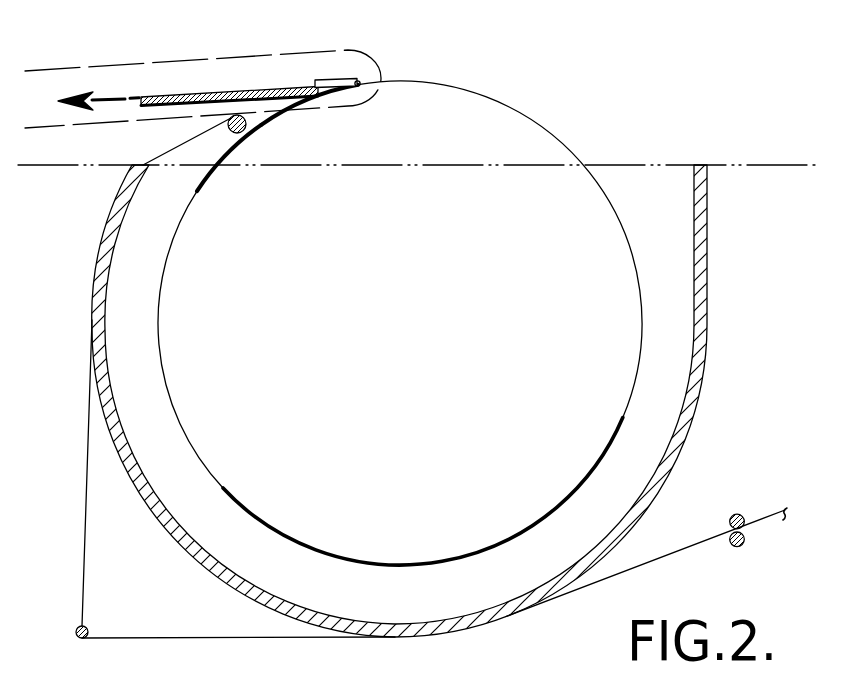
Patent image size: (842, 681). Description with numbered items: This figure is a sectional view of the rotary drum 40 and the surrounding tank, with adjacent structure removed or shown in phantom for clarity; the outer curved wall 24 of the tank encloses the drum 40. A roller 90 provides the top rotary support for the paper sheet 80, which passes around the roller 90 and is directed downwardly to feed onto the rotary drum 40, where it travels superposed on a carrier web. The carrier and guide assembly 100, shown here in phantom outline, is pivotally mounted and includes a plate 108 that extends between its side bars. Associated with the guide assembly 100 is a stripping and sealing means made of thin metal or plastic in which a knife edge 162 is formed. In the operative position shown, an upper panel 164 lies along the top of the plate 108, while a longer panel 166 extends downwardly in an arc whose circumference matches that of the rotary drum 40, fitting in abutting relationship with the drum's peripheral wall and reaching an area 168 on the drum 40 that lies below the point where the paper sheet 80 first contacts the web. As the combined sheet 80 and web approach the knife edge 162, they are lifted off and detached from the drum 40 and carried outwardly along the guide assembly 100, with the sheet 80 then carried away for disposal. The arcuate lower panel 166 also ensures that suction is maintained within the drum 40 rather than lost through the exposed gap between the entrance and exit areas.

The curved wall of housing 24 is at (706, 347).
The rotary drum 40 is at (550, 133).
The paper sheet 80 is at (41, 67).
The roller or shaft 90 is at (243, 134).
The carrier and guide assembly 100 is at (212, 58).
The plate 108 is at (157, 96).
The knife edge 162 is at (361, 86).
The upper panel 164 is at (360, 82).
The longer panel 166 is at (275, 124).
The area on rotary drum 168 is at (198, 193).